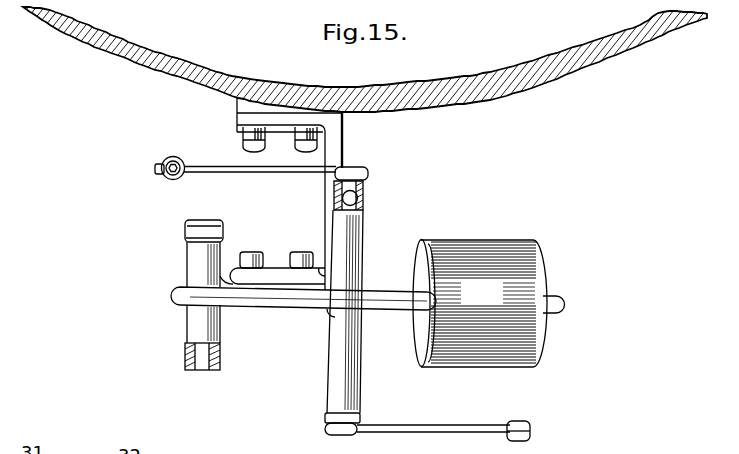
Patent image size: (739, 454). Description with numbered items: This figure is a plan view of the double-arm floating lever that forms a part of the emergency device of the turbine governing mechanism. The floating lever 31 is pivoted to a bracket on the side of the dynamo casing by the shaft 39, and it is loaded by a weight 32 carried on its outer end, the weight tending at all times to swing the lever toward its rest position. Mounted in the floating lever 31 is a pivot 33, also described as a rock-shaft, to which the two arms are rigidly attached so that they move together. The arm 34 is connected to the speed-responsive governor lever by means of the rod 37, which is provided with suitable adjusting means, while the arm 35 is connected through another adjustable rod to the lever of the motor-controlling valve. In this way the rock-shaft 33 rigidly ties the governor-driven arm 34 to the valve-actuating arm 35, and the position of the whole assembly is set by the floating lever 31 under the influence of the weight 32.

The floating lever 31 is at (285, 311).
The weight 32 is at (494, 240).
The pivot 33 is at (364, 200).
The arm 34 is at (260, 173).
The arm 35 is at (415, 418).
The rod 37 is at (175, 157).
The shaft 39 is at (220, 365).